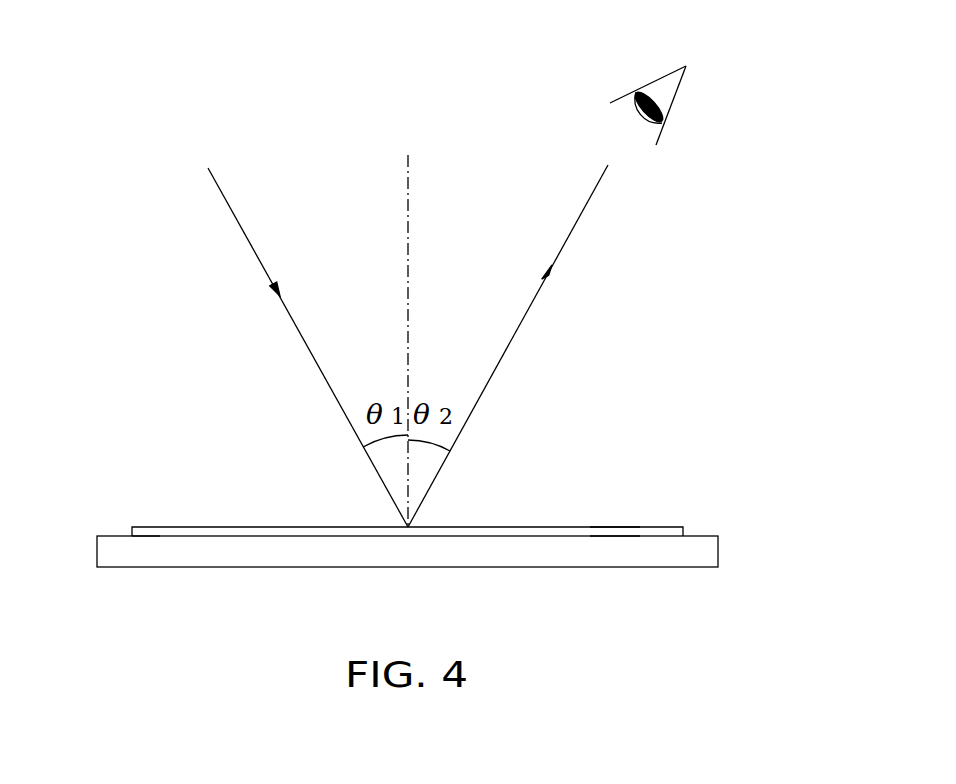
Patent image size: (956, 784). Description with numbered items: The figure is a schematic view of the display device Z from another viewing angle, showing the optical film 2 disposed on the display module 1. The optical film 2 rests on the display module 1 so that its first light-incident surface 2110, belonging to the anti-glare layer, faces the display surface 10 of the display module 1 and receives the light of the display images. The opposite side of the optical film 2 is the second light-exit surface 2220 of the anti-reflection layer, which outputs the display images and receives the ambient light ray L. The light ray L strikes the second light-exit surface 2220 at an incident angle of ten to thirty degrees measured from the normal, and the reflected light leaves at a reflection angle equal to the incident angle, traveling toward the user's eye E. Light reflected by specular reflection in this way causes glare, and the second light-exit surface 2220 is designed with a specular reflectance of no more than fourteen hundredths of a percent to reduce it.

The display module 1 is at (710, 551).
The optical film 2 is at (683, 531).
The display surface 10 is at (158, 531).
The second light-exit surface 2220 is at (615, 526).
The first light-incident surface 2110 is at (615, 539).
The light ray L is at (304, 332).
The user's eye E is at (553, 283).
The display device Z is at (128, 88).